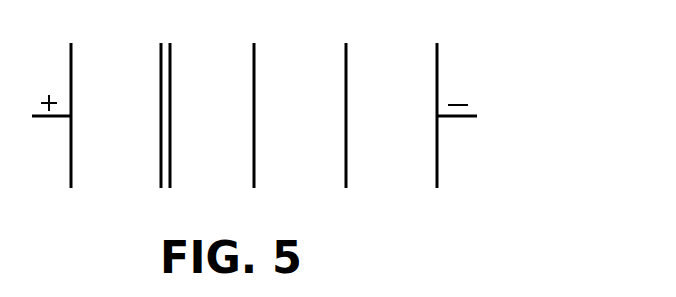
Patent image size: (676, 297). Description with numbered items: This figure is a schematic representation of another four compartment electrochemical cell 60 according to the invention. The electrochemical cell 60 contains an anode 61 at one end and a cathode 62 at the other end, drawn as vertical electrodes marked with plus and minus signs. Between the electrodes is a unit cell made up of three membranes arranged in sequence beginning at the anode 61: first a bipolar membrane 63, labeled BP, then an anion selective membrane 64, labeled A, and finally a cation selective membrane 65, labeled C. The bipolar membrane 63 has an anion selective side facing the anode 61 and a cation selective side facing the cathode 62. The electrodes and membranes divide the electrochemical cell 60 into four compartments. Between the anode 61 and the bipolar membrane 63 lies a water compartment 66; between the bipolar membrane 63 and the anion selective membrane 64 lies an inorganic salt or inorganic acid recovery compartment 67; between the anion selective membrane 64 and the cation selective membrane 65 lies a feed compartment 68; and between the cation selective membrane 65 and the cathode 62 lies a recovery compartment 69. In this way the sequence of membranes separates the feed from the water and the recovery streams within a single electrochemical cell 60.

The electrochemical cell 60 is at (494, 66).
The anode 61 is at (55, 102).
The cathode 62 is at (450, 102).
The bipolar membrane 63 is at (166, 120).
The anion selective membrane 64 is at (253, 120).
The cation selective membrane 65 is at (343, 120).
The water compartment 66 is at (112, 177).
The inorganic salt or inorganic acid recovery compartment 67 is at (207, 177).
The feed compartment 68 is at (302, 177).
The recovery compartment 69 is at (388, 177).